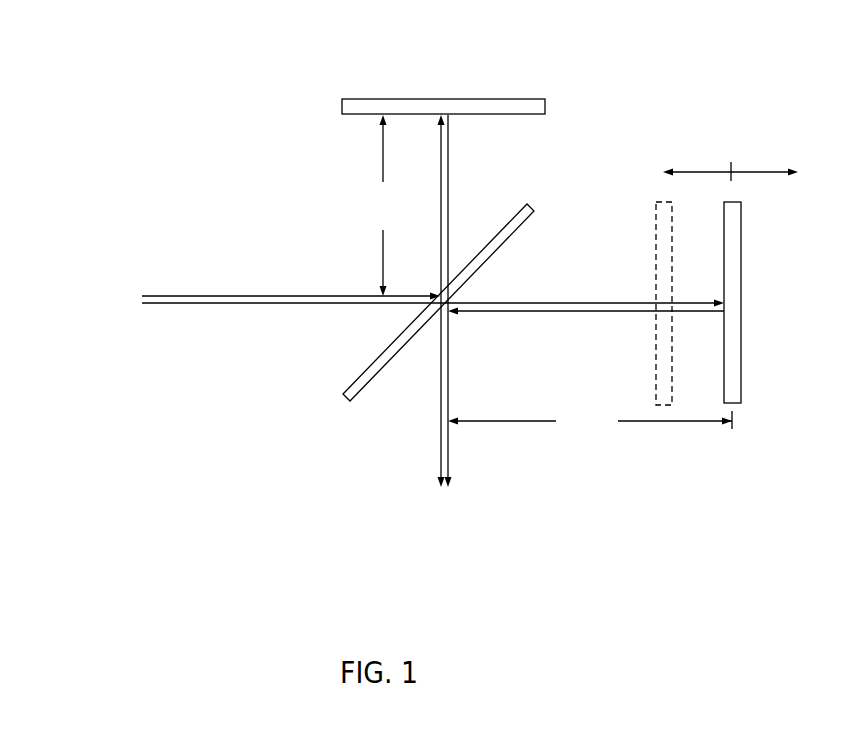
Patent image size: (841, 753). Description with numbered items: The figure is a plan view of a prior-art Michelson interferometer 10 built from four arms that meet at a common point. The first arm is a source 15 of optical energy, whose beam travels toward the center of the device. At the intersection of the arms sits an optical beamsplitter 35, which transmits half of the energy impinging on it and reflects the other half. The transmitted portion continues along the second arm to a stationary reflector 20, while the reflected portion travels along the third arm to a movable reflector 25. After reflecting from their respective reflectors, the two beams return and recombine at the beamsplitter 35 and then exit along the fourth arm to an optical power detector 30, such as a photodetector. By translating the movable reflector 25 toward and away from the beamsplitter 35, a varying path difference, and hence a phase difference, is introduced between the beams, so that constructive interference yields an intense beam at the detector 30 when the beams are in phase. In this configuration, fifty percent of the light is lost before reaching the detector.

The Michelson interferometer 10 is at (741, 71).
The source 15 is at (90, 317).
The stationary reflector 20 is at (492, 98).
The movable reflector 25 is at (656, 238).
The optical power detector 30 is at (498, 513).
The optical beamsplitter 35 is at (517, 233).